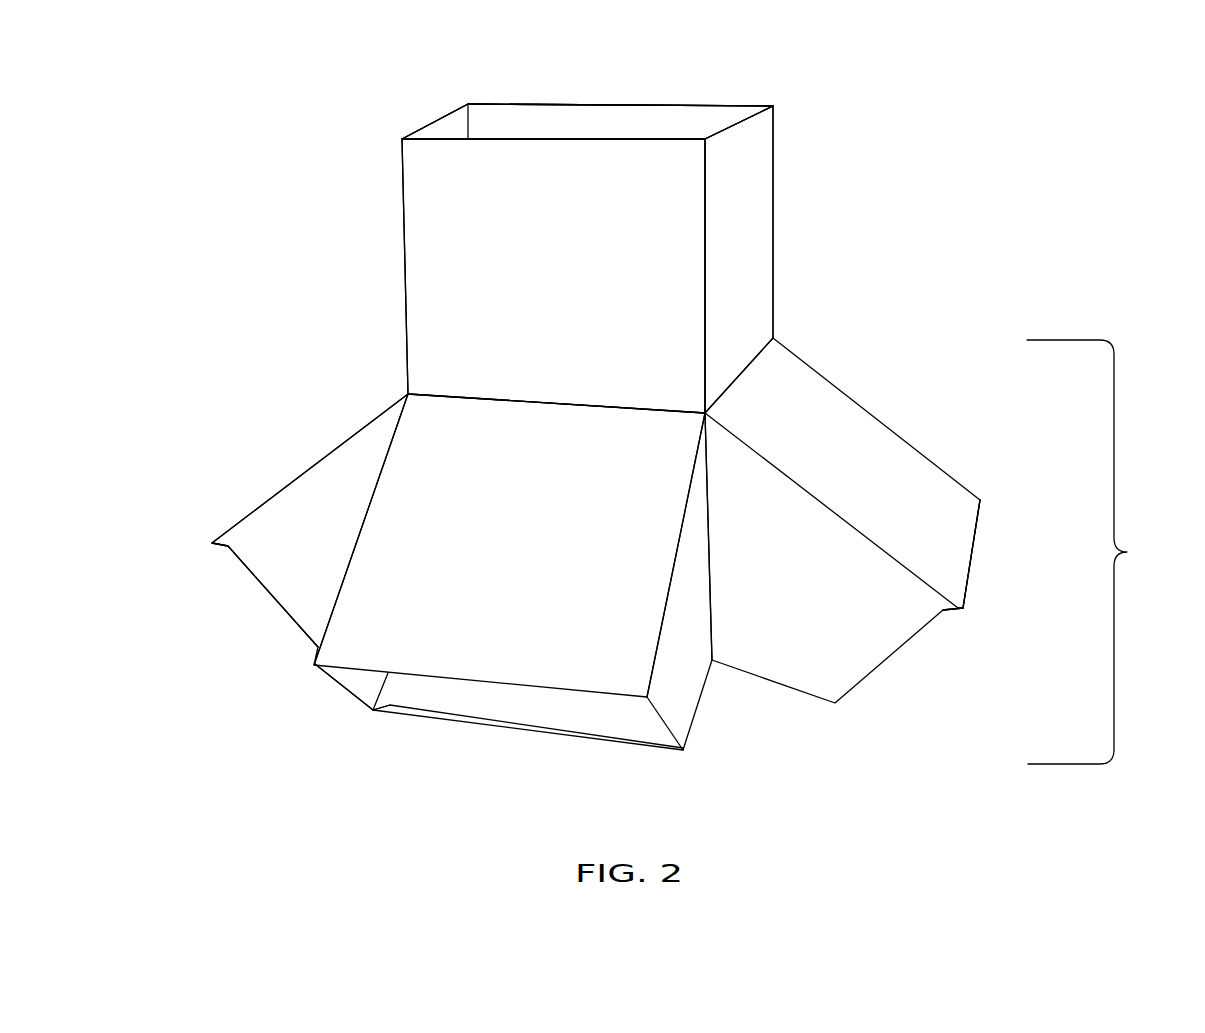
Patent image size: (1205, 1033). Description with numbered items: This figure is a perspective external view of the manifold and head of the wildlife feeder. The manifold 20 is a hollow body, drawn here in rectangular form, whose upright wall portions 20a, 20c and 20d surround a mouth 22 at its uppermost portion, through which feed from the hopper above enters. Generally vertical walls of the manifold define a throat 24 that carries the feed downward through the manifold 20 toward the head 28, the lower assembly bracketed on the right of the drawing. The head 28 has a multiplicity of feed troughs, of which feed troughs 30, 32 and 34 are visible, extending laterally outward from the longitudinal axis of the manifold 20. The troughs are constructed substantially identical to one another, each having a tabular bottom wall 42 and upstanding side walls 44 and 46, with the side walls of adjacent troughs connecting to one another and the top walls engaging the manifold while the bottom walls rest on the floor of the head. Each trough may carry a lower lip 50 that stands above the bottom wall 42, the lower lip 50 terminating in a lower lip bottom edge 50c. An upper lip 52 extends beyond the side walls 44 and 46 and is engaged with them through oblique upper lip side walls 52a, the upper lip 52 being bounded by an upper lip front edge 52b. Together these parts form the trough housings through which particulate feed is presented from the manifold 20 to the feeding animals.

The manifold 20 is at (808, 227).
The side panel 20a is at (739, 259).
The top edge fold 20c is at (448, 124).
The front panel 20d is at (578, 113).
The mouth 22 is at (537, 112).
The throat 24 is at (697, 125).
The head 28 is at (1127, 552).
The feed trough 30 is at (868, 445).
The feed trough 32 is at (285, 507).
The feed trough 34 is at (509, 545).
The bottom wall 42 is at (513, 705).
The side wall 44 is at (462, 545).
The side wall 46 is at (271, 739).
The lower lip 50 is at (483, 723).
The lower lip bottom edge 50c is at (392, 710).
The upper lip 52 is at (218, 547).
The upper lip side walls 52a is at (948, 613).
The upper lip front edge 52b is at (973, 557).